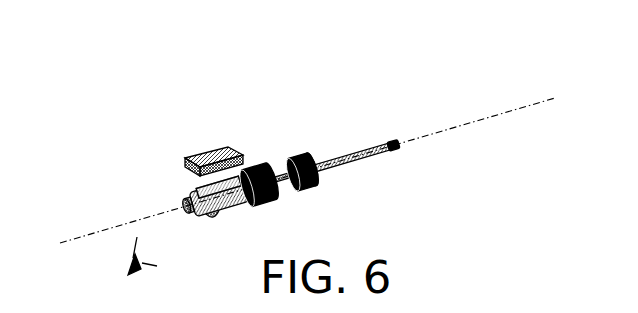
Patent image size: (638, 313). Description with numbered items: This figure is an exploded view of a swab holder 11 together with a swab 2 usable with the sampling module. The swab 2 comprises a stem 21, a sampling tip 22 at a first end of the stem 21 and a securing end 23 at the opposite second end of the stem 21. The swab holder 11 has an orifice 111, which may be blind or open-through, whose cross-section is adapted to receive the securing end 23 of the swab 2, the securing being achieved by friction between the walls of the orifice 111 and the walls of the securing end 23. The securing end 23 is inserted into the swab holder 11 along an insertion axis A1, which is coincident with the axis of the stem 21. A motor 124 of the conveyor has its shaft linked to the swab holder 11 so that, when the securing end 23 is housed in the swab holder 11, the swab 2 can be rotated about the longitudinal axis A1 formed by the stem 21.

The swab 2 is at (362, 123).
The swab holder 11 is at (215, 128).
The orifice 111 is at (279, 163).
The motor 124 is at (197, 192).
The stem 21 is at (357, 157).
The sampling tip 22 is at (393, 147).
The securing end 23 is at (300, 152).
The insertion axis A1 is at (480, 122).